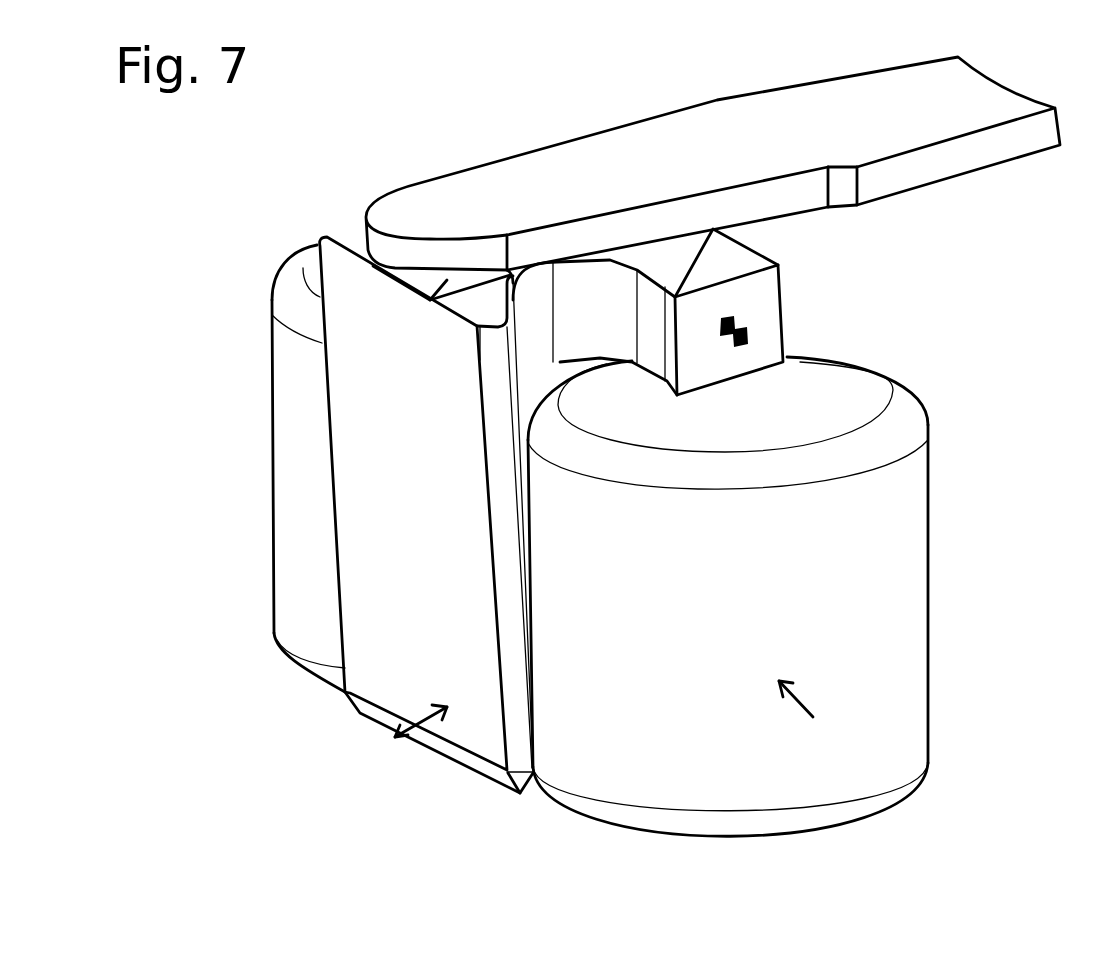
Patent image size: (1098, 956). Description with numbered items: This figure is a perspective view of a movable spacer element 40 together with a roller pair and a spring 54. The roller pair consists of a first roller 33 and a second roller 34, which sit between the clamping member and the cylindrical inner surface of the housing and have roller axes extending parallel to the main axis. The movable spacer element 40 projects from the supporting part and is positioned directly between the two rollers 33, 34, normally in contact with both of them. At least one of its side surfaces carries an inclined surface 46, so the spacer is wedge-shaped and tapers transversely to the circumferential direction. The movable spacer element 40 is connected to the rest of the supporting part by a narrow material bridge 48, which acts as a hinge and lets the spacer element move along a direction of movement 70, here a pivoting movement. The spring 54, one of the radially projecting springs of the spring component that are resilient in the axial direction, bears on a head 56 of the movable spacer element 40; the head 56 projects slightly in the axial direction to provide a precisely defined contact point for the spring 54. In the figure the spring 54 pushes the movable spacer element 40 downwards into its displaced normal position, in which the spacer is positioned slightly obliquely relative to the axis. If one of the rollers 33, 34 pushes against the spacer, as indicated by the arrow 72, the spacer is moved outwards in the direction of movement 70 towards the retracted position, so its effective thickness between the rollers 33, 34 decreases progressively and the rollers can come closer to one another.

The first roller 33 is at (892, 632).
The second roller 34 is at (287, 300).
The movable spacer element 40 is at (396, 552).
The inclined surface 46 is at (528, 362).
The material bridge 48 is at (703, 257).
The spring 54 is at (658, 165).
The head 56 is at (425, 284).
The direction of movement 70 is at (417, 723).
The arrow 72 is at (803, 700).